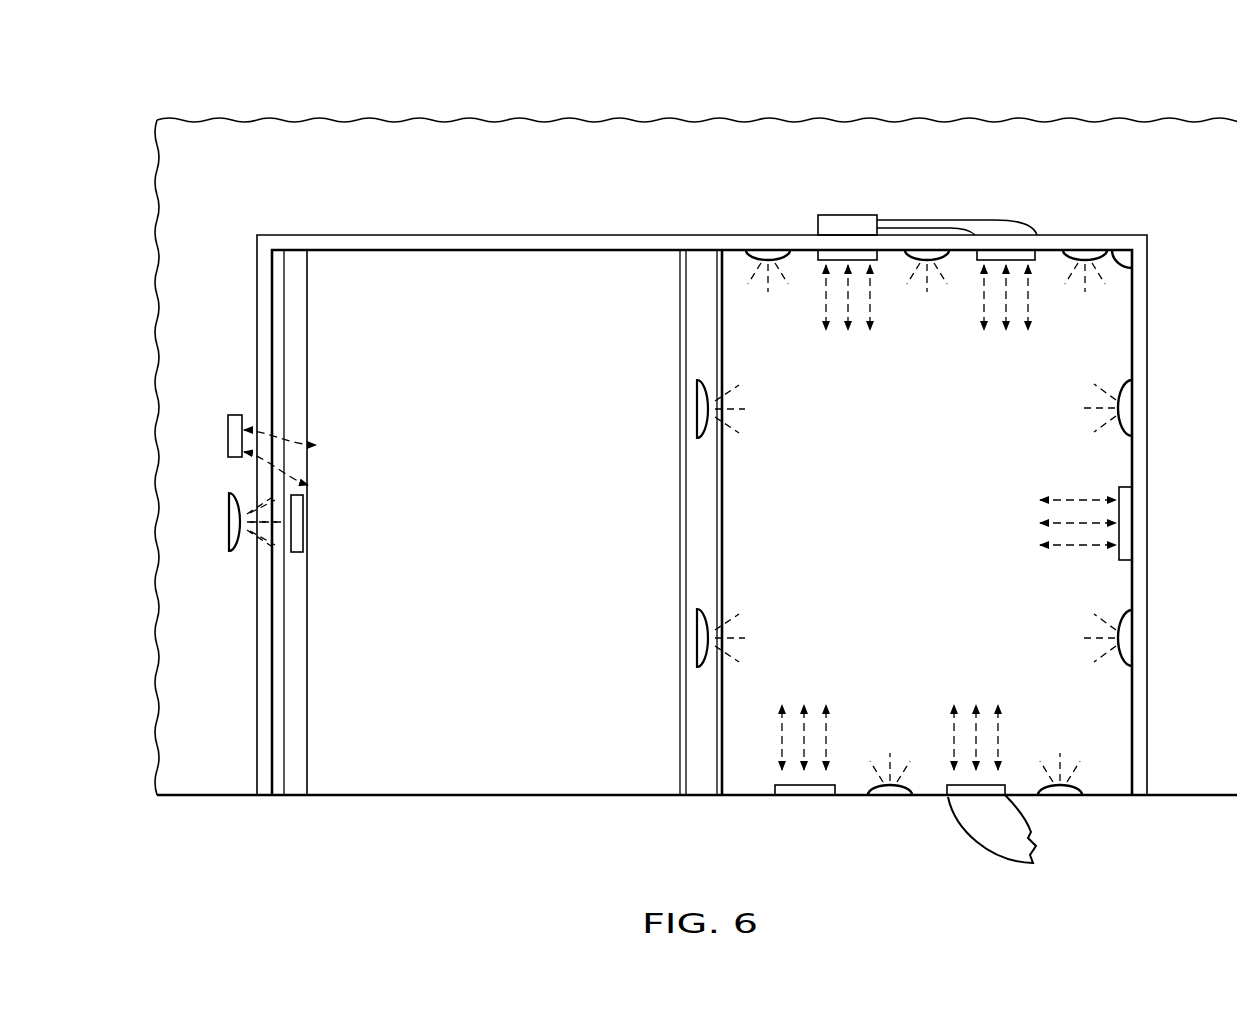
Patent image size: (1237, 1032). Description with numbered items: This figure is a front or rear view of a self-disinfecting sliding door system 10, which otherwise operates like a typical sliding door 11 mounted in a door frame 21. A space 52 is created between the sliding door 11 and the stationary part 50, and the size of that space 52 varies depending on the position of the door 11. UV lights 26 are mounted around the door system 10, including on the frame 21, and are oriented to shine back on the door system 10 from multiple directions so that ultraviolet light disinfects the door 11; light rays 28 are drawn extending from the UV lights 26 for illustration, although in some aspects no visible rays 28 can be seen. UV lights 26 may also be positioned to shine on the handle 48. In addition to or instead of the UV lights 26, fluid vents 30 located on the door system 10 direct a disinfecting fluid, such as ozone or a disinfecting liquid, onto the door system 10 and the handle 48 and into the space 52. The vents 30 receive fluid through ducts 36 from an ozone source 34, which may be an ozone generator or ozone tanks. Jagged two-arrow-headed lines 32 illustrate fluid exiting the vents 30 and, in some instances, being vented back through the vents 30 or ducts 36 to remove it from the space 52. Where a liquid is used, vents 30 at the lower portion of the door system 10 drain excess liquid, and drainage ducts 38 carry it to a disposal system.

The door system 10 is at (1060, 76).
The door 11 is at (484, 566).
The door frame 21 is at (547, 235).
The UV lights 26 is at (905, 255).
The light rays 28 is at (767, 290).
The fluid vents 30 is at (810, 252).
The jagged two-arrow-headed lines 32 is at (872, 312).
The ozone source 34 is at (851, 215).
The ducts 36 is at (957, 218).
The drainage ducts 38 is at (971, 840).
The handle 48 is at (305, 522).
The stationary part 50 is at (889, 536).
The space 52 is at (699, 768).